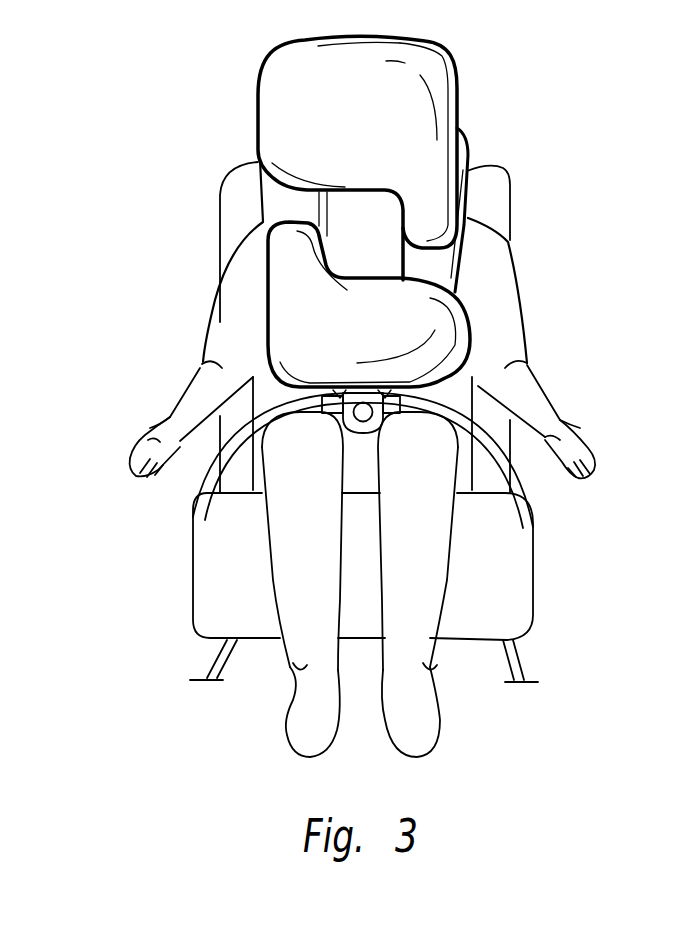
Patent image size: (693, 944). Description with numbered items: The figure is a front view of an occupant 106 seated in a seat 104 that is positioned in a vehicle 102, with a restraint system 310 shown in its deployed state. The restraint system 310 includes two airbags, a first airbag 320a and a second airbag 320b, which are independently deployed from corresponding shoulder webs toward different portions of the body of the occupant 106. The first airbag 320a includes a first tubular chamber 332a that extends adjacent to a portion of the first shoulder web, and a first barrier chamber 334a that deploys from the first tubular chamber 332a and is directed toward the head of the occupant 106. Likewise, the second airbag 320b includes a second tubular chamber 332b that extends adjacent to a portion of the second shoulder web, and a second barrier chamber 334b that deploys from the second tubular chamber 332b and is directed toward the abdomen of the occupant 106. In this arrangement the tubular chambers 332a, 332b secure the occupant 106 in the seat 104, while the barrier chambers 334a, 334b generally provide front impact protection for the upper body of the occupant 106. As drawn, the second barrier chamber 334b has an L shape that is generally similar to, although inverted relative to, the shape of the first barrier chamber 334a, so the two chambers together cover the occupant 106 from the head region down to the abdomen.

The vehicle 102 is at (553, 749).
The seat 104 is at (518, 610).
The occupant 106 is at (447, 553).
The restraint system 310 is at (177, 129).
The first airbag 320a is at (484, 118).
The second airbag 320b is at (234, 133).
The first tubular chamber 332a is at (436, 273).
The second tubular chamber 332b is at (280, 201).
The first barrier chamber 334a is at (424, 152).
The second barrier chamber 334b is at (347, 318).